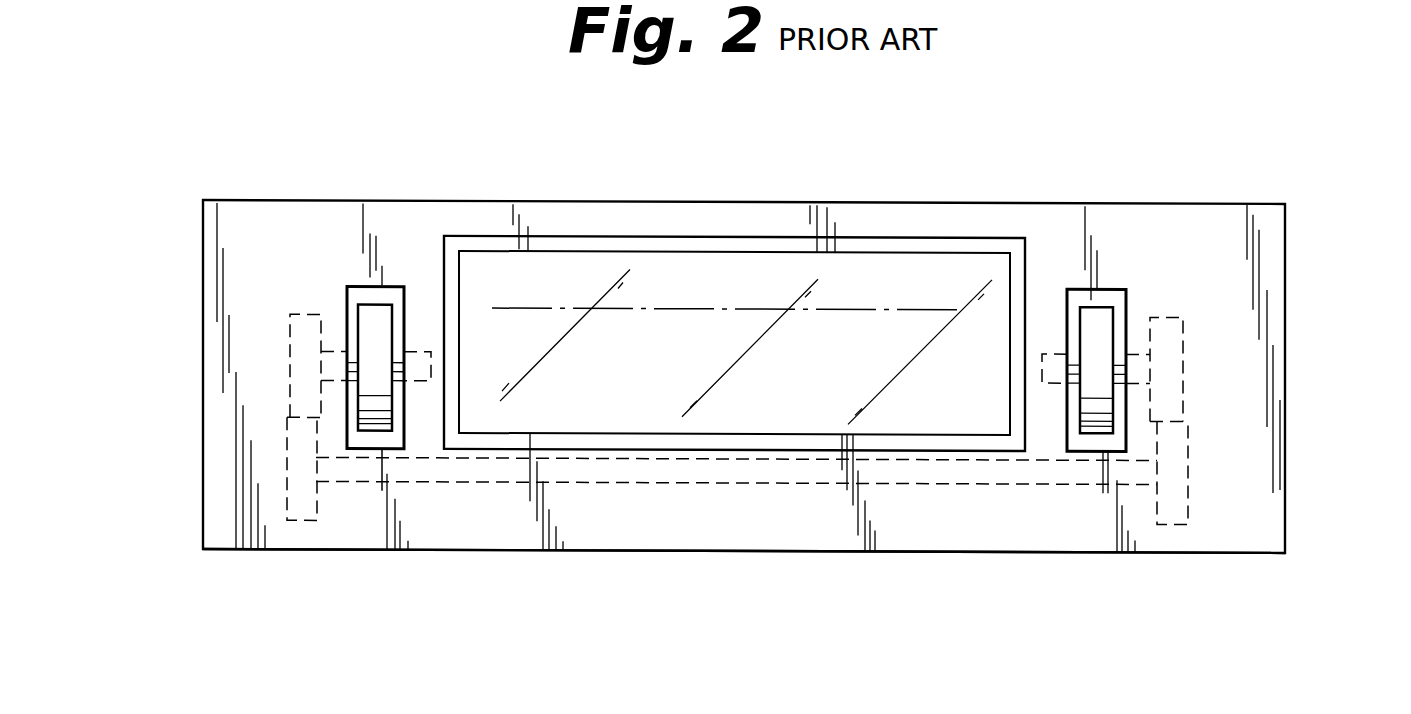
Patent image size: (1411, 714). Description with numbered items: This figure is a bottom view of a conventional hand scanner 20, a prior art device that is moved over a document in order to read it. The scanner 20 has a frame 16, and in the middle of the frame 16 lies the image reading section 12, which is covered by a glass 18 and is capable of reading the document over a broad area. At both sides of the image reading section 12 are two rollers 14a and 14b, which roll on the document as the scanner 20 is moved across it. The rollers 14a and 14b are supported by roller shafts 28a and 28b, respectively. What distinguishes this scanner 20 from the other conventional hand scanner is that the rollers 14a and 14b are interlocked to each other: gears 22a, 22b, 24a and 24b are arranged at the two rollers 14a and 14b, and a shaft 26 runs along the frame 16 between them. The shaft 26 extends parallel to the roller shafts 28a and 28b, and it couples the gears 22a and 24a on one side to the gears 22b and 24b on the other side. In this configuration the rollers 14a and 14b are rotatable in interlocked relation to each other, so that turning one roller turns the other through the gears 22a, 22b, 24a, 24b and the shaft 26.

The hand scanner 20 is at (1308, 193).
The frame 16 is at (485, 515).
The glass 18 is at (918, 277).
The image reading section 12 is at (647, 307).
The roller 14a is at (377, 327).
The roller 14b is at (1095, 327).
The roller shaft 28a is at (332, 350).
The roller shaft 28b is at (1135, 354).
The gear 24a is at (300, 372).
The gear 24b is at (1180, 394).
The gear 22a is at (292, 470).
The gear 22b is at (1185, 490).
The shaft 26 is at (800, 473).